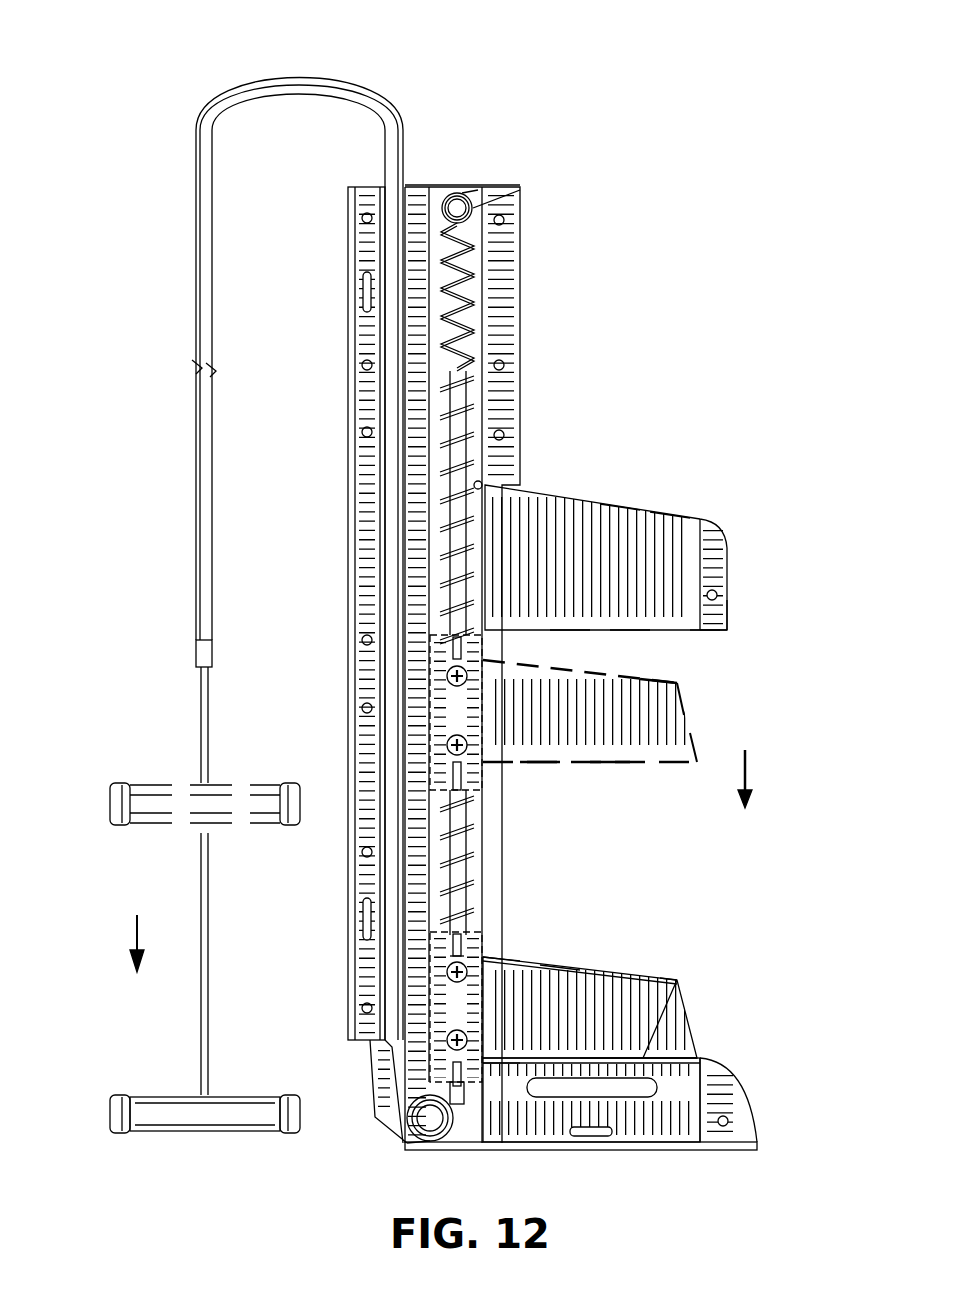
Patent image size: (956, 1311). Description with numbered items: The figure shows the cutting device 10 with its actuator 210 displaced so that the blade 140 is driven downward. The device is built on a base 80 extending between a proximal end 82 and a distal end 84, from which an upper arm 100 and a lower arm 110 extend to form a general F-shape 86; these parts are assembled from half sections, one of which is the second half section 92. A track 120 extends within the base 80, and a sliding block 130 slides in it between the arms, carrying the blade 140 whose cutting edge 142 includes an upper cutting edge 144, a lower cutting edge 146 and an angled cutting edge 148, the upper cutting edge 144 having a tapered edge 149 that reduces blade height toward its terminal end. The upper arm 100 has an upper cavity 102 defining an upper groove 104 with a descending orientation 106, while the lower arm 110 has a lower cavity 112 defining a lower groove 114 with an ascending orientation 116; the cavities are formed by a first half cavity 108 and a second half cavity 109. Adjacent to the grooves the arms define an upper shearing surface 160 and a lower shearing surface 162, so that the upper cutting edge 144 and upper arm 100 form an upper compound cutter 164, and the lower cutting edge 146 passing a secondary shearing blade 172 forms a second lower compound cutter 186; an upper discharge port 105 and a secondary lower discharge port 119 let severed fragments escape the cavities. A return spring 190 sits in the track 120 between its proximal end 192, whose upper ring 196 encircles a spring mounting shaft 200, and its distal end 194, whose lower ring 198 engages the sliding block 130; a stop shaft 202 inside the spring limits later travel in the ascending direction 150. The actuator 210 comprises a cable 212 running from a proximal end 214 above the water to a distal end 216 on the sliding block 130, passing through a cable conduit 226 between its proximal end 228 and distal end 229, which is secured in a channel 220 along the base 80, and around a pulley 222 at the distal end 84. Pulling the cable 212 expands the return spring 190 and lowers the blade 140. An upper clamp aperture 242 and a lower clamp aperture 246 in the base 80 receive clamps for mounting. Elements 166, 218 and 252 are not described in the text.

The cutting device 10 is at (506, 218).
The base 80 is at (520, 305).
The proximal end 82 is at (497, 188).
The distal end 84 is at (435, 1143).
The F-shape 86 is at (515, 270).
The second half section 92 is at (516, 370).
The upper arm 100 is at (727, 545).
The upper cavity 102 is at (680, 520).
The upper groove 104 is at (715, 630).
The upper discharge port 105 is at (620, 500).
The descending orientation 106 is at (628, 633).
The first half cavity 108 is at (665, 505).
The second half cavity 109 is at (670, 1137).
The lower arm 110 is at (745, 1142).
The lower cavity 112 is at (690, 1115).
The lower groove 114 is at (705, 1082).
The ascending orientation 116 is at (643, 1058).
The secondary lower discharge port 119 is at (640, 1078).
The track 120 is at (457, 192).
The sliding block 130 is at (448, 995).
The blade 140 is at (608, 763).
The cutting edge 142 is at (680, 683).
The upper cutting edge 144 is at (640, 995).
The lower cutting edge 146 is at (507, 1060).
The angled cutting edge 148 is at (686, 723).
The tapered edge 149 is at (495, 958).
The ascending direction 150 is at (777, 779).
The upper shearing surface 160 is at (570, 633).
The lower shearing surface 162 is at (677, 980).
The upper compound cutter 164 is at (705, 632).
The edge 166 is at (492, 1060).
The secondary shearing blade 172 is at (727, 628).
The second lower compound cutter 186 is at (598, 1055).
The return spring 190 is at (470, 340).
The proximal end 192 is at (473, 208).
The distal end 194 is at (455, 940).
The upper ring 196 is at (466, 200).
The lower ring 198 is at (455, 950).
The spring mounting shaft 200 is at (452, 204).
The stop shaft 202 is at (470, 415).
The actuator 210 is at (115, 1110).
The cable 212 is at (201, 720).
The proximal end 214 is at (205, 783).
The distal end 216 is at (452, 1075).
The grip 218 is at (222, 1133).
The channel 220 is at (392, 580).
The pulley 222 is at (425, 1130).
The cable conduit 226 is at (196, 255).
The proximal end 228 is at (196, 660).
The distal end 229 is at (378, 1047).
The upper clamp aperture 242 is at (367, 297).
The lower clamp aperture 246 is at (378, 910).
The small slot 252 is at (580, 1136).